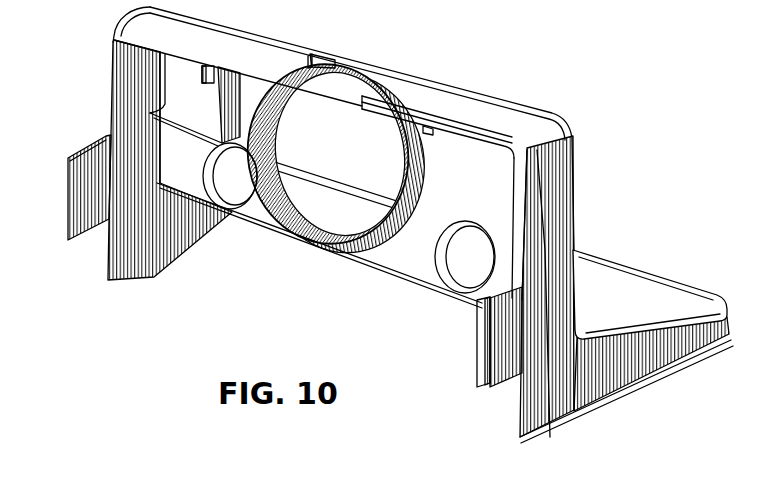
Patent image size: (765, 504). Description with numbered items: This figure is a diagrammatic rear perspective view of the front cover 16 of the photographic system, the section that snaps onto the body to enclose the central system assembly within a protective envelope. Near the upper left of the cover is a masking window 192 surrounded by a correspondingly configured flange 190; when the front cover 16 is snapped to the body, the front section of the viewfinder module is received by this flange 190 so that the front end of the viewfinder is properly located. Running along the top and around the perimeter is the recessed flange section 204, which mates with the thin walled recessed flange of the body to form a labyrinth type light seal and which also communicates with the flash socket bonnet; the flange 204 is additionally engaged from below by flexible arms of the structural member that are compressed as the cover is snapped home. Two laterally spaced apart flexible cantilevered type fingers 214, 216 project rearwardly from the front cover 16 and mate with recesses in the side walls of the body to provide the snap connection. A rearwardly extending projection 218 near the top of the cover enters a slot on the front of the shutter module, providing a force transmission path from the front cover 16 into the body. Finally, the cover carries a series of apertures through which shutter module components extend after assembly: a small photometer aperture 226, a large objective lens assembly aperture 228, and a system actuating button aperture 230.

The front cover 16 is at (499, 86).
The flange 190 is at (200, 134).
The masking window 192 is at (170, 70).
The recessed flange section 204 is at (338, 87).
The flexible cantilevered finger 214 is at (477, 357).
The flexible cantilevered finger 216 is at (68, 216).
The rearwardly extending projection 218 is at (213, 83).
The photometer aperture 226 is at (222, 221).
The objective lens assembly aperture 228 is at (310, 226).
The system actuating button aperture 230 is at (444, 285).